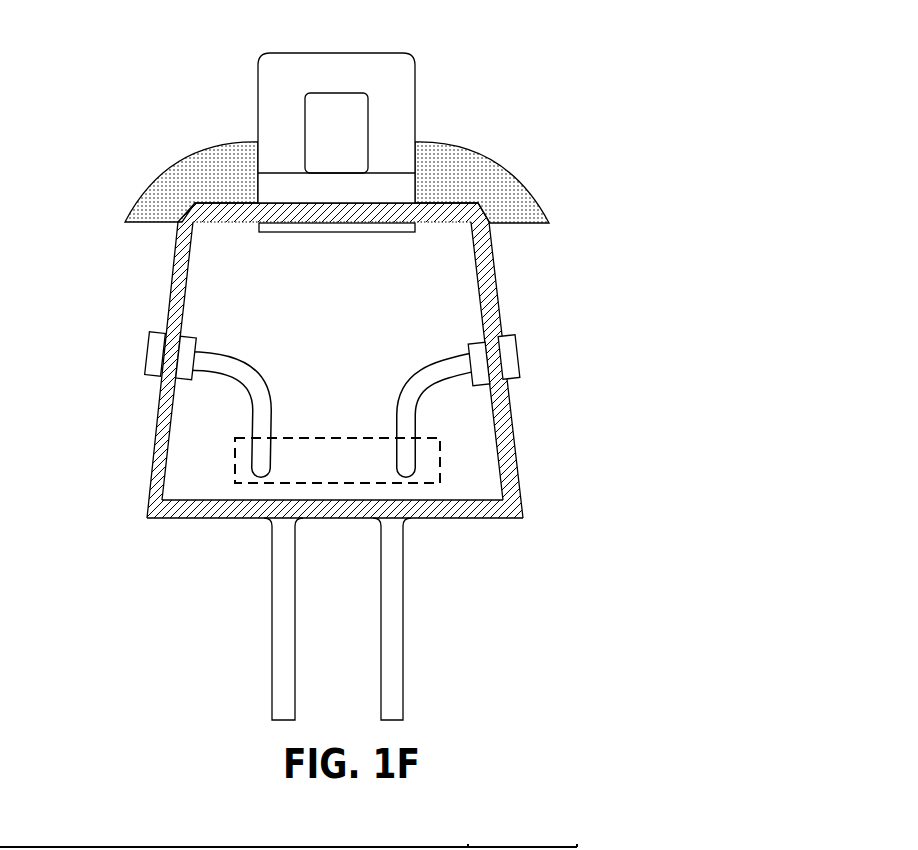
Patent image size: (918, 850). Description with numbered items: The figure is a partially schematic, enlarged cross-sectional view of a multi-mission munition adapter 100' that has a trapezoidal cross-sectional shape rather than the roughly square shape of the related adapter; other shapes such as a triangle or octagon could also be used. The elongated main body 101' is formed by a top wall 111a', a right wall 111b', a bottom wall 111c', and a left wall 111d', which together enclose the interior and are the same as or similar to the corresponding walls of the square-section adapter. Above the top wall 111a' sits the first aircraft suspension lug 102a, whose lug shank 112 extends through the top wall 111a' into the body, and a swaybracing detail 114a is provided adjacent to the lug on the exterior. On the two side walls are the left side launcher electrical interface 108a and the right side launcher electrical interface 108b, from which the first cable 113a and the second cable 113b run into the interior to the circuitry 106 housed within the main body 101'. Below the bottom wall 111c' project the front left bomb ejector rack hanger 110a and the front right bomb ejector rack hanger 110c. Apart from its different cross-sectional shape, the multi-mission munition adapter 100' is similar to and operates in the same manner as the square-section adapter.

The multi-mission munition adapter 100' is at (339, 372).
The elongated main body 101' is at (328, 386).
The first aircraft suspension lug 102a is at (377, 53).
The circuitry 106 is at (338, 435).
The left side launcher electrical interface 108a is at (518, 352).
The right side launcher electrical interface 108b is at (147, 352).
The front left bomb ejector rack hanger 110a is at (403, 610).
The front right bomb ejector rack hanger 110c is at (272, 610).
The top wall 111a' is at (333, 248).
The right wall 111b' is at (121, 370).
The bottom wall 111c' is at (347, 534).
The left wall 111d' is at (539, 370).
The lug shank 112 is at (400, 233).
The first cable 113a is at (437, 357).
The second cable 113b is at (255, 367).
The swaybracing detail 114a is at (435, 142).